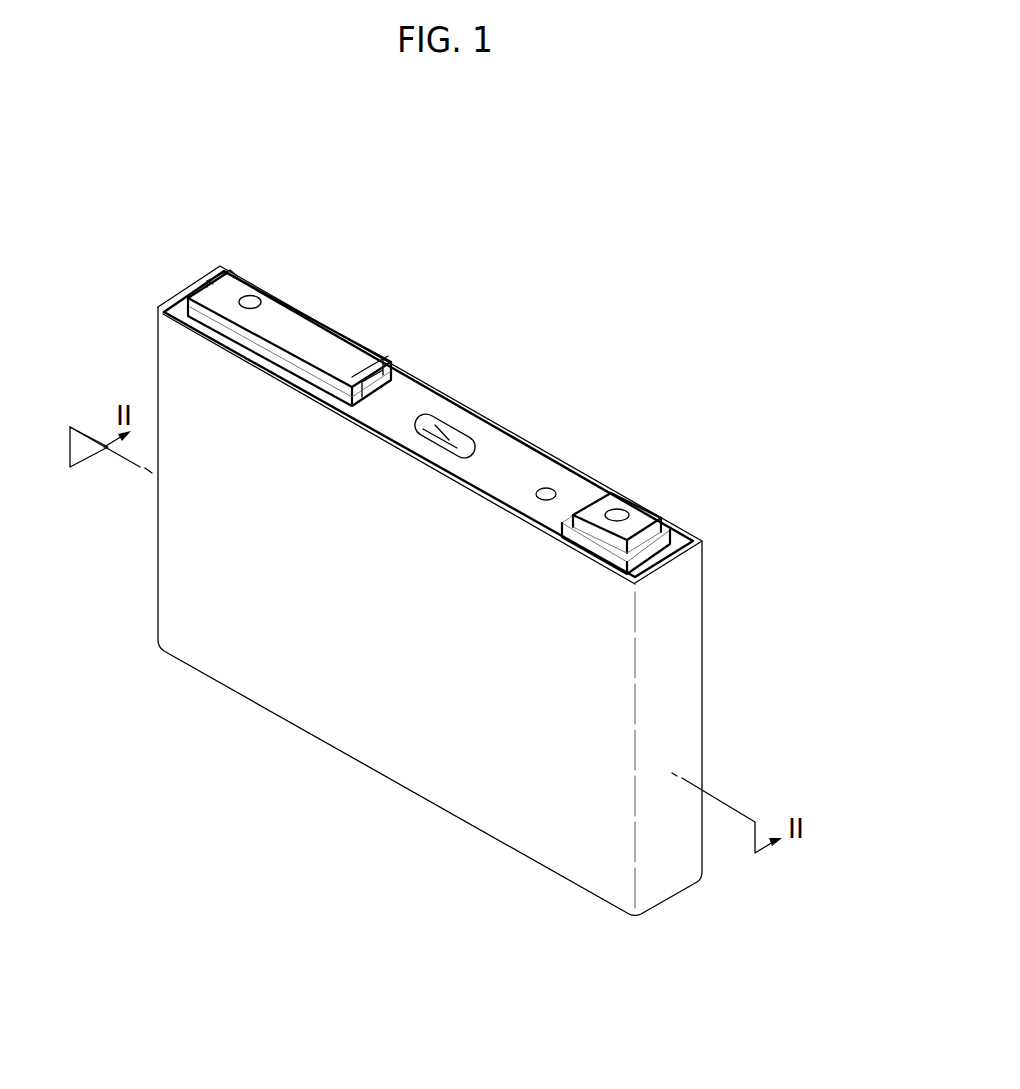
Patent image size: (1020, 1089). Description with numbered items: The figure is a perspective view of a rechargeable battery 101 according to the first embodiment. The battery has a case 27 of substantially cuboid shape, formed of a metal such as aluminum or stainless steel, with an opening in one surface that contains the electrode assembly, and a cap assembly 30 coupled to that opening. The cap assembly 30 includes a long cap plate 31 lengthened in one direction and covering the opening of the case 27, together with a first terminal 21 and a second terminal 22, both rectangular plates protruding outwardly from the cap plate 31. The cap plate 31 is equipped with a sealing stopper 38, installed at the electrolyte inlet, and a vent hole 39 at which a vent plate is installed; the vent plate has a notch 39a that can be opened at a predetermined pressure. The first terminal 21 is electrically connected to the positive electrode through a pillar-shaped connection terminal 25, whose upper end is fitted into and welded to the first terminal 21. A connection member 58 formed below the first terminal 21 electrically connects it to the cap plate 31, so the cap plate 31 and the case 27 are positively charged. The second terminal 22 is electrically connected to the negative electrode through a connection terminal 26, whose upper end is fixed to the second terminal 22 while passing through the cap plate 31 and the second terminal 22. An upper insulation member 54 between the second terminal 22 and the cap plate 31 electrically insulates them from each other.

The rechargeable battery 101 is at (507, 226).
The first terminal 21 is at (642, 517).
The second terminal 22 is at (285, 304).
The connection terminal 25 is at (618, 509).
The connection terminal 26 is at (253, 296).
The case 27 is at (347, 725).
The cap assembly 30 is at (525, 443).
The cap plate 31 is at (403, 392).
The sealing stopper 38 is at (550, 487).
The vent hole 39 is at (446, 421).
The notch 39a is at (455, 433).
The upper insulation member 54 is at (358, 333).
The connection member 58 is at (668, 526).